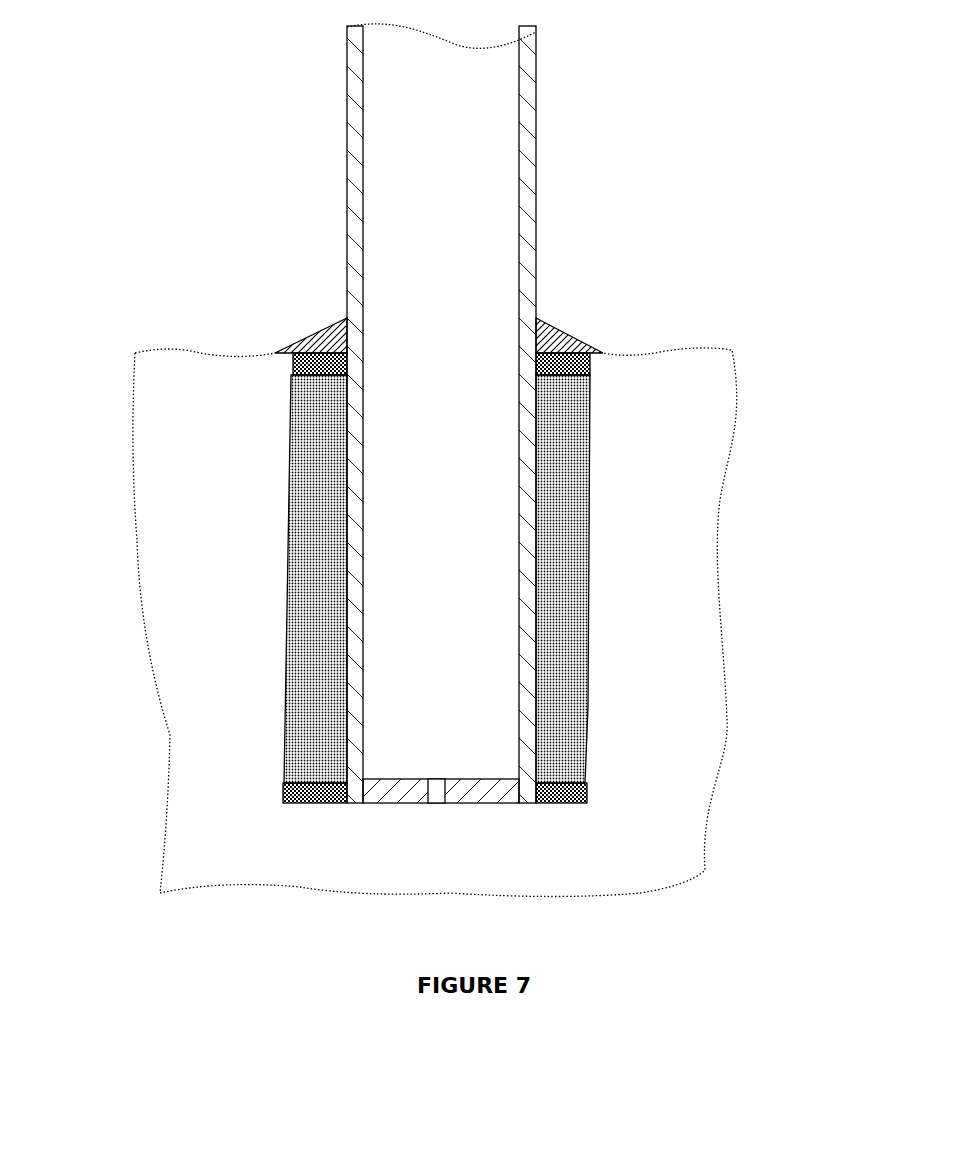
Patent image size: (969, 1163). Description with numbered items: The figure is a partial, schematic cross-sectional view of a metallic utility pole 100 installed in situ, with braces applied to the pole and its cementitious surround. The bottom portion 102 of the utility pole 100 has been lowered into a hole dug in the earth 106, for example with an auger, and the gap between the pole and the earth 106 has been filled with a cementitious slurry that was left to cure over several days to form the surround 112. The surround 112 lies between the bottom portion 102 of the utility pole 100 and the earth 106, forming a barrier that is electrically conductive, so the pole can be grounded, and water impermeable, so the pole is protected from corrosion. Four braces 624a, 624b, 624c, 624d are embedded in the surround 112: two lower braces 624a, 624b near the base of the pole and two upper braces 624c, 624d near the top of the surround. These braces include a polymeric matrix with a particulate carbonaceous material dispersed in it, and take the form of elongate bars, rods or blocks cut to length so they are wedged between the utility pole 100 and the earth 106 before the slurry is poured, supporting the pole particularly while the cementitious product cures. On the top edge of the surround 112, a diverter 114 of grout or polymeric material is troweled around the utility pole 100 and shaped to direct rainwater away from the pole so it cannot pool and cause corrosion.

The utility pole 100 is at (525, 140).
The bottom portion 102 is at (353, 760).
The earth 106 is at (668, 660).
The surround 112 is at (553, 467).
The diverter 114 is at (560, 342).
The brace 624a is at (287, 797).
The brace 624b is at (585, 793).
The brace 624c is at (293, 375).
The brace 624d is at (590, 368).